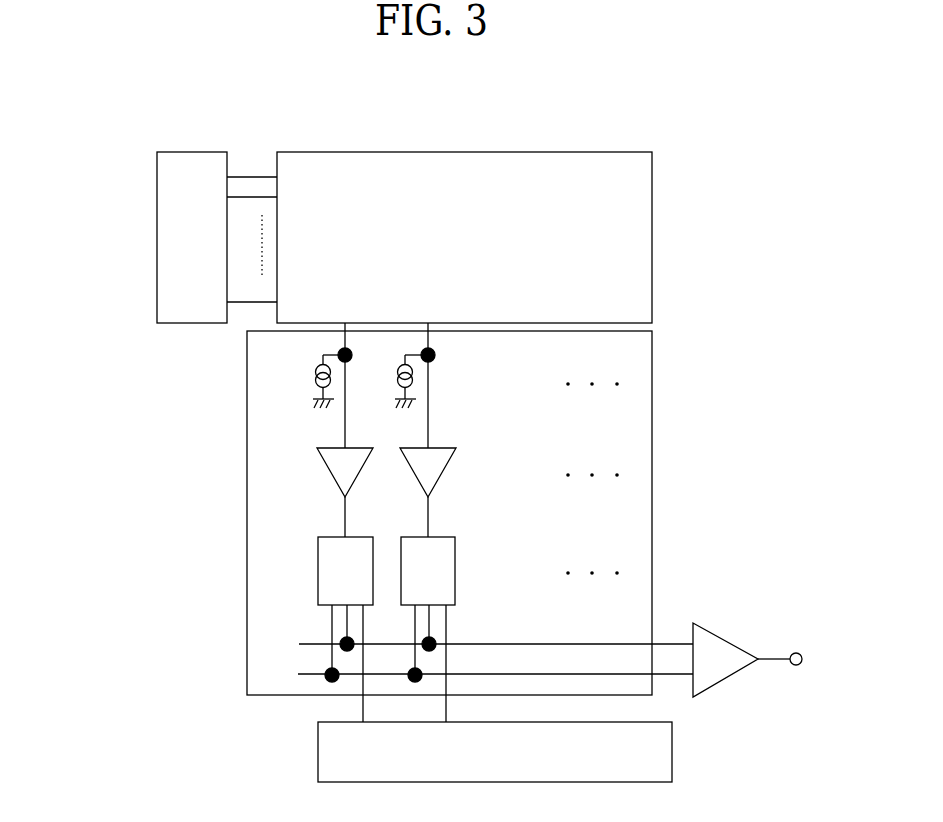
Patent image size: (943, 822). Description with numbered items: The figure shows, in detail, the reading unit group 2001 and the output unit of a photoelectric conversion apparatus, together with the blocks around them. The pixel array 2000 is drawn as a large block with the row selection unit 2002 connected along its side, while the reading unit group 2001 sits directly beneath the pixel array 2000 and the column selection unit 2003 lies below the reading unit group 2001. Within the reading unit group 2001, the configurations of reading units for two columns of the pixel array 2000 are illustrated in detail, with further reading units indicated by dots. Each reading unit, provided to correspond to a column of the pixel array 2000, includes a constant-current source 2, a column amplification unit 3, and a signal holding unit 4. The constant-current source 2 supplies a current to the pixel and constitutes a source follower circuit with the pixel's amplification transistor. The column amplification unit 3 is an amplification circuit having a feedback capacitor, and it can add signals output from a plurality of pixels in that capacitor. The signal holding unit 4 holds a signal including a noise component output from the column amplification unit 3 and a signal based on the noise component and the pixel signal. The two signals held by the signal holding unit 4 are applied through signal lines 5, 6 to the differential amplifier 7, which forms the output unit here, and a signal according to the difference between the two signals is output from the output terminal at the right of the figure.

The constant-current source 2 is at (315, 377).
The column amplification unit 3 is at (331, 475).
The signal holding unit 4 is at (318, 572).
The signal line 5 is at (505, 644).
The signal line 6 is at (562, 674).
The differential amplifier 7 is at (725, 638).
The pixel array 2000 is at (652, 243).
The reading unit group 2001 is at (247, 539).
The row selection unit 2002 is at (157, 229).
The column selection unit 2003 is at (318, 751).